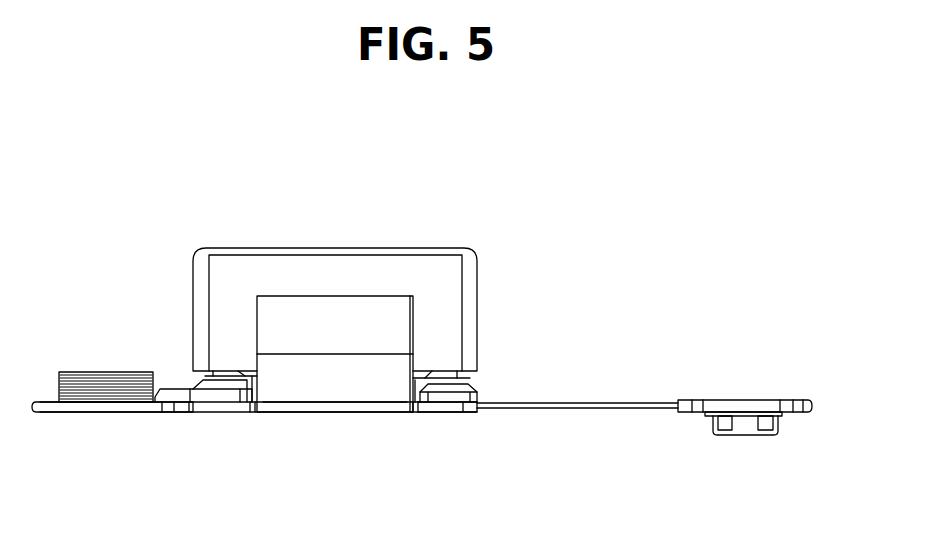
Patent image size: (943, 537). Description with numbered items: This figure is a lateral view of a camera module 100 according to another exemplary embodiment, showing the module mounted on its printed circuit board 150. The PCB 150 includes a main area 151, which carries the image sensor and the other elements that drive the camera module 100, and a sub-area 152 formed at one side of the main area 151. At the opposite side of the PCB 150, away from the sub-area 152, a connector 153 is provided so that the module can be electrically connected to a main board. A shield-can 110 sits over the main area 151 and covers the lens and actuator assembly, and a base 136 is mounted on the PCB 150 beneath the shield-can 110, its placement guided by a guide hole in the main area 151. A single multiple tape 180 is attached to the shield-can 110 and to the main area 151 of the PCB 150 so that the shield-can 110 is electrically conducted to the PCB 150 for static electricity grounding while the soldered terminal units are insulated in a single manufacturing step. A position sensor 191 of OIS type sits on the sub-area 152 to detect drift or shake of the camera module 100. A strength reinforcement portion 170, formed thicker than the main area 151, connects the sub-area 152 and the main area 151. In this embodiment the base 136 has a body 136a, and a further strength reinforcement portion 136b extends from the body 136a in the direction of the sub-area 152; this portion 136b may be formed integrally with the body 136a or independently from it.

The camera module 100 is at (125, 154).
The shield-can 110 is at (442, 280).
The base 136 is at (500, 356).
The body 136a is at (472, 395).
The strength reinforcement portion 136b is at (180, 395).
The printed circuit board 150 is at (422, 462).
The main area 151 is at (447, 408).
The sub-area 152 is at (97, 408).
The connector 153 is at (752, 430).
The strength reinforcement portion 170 is at (175, 412).
The single multiple tape 180 is at (337, 378).
The position sensor 191 is at (98, 377).